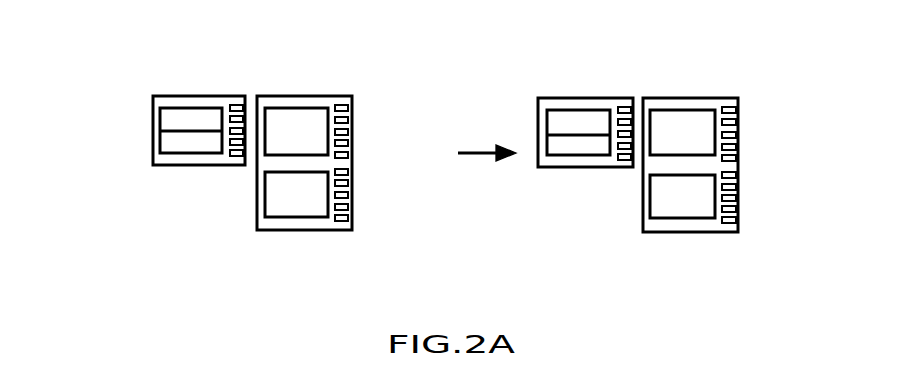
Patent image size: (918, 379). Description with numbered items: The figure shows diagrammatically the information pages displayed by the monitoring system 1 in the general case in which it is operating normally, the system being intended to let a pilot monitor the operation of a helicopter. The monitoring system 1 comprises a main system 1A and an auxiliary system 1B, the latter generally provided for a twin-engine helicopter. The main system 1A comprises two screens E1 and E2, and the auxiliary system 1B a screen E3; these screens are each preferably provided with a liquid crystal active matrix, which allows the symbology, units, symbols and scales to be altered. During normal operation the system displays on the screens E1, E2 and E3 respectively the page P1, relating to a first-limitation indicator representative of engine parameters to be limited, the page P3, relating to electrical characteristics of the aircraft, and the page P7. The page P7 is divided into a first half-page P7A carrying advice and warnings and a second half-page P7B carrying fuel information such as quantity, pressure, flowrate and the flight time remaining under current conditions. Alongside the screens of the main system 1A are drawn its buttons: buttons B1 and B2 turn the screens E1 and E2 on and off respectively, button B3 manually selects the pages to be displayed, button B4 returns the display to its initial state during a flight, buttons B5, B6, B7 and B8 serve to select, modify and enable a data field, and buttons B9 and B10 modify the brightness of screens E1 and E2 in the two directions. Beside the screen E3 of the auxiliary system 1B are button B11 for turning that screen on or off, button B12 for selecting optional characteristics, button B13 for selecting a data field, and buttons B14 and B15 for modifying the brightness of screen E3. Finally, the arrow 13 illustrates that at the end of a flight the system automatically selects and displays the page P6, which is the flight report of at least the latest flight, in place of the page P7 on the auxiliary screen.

The monitoring system 1 is at (125, 252).
The main system 1A is at (365, 150).
The auxiliary system 1B is at (148, 88).
The arrow 13 is at (478, 150).
The page relating to a first-limitation indicator P1 is at (287, 120).
The page relating to electrical characteristics P3 is at (285, 200).
The page relating to a flight report P6 is at (685, 205).
The page P7 is at (188, 150).
The first half-page P7A is at (167, 120).
The second half-page P7B is at (163, 140).
The screen E1 is at (310, 108).
The screen E2 is at (306, 220).
The screen E3 is at (177, 110).
The button B1 is at (352, 108).
The button B2 is at (738, 118).
The button B3 is at (351, 132).
The button B4 is at (740, 147).
The button B5 is at (353, 158).
The button B6 is at (738, 170).
The button B7 is at (355, 190).
The button B8 is at (737, 198).
The button B9 is at (353, 213).
The button B10 is at (738, 223).
The button B11 is at (627, 110).
The button B12 is at (248, 113).
The button B13 is at (250, 160).
The button B14 is at (617, 145).
The button B15 is at (622, 160).